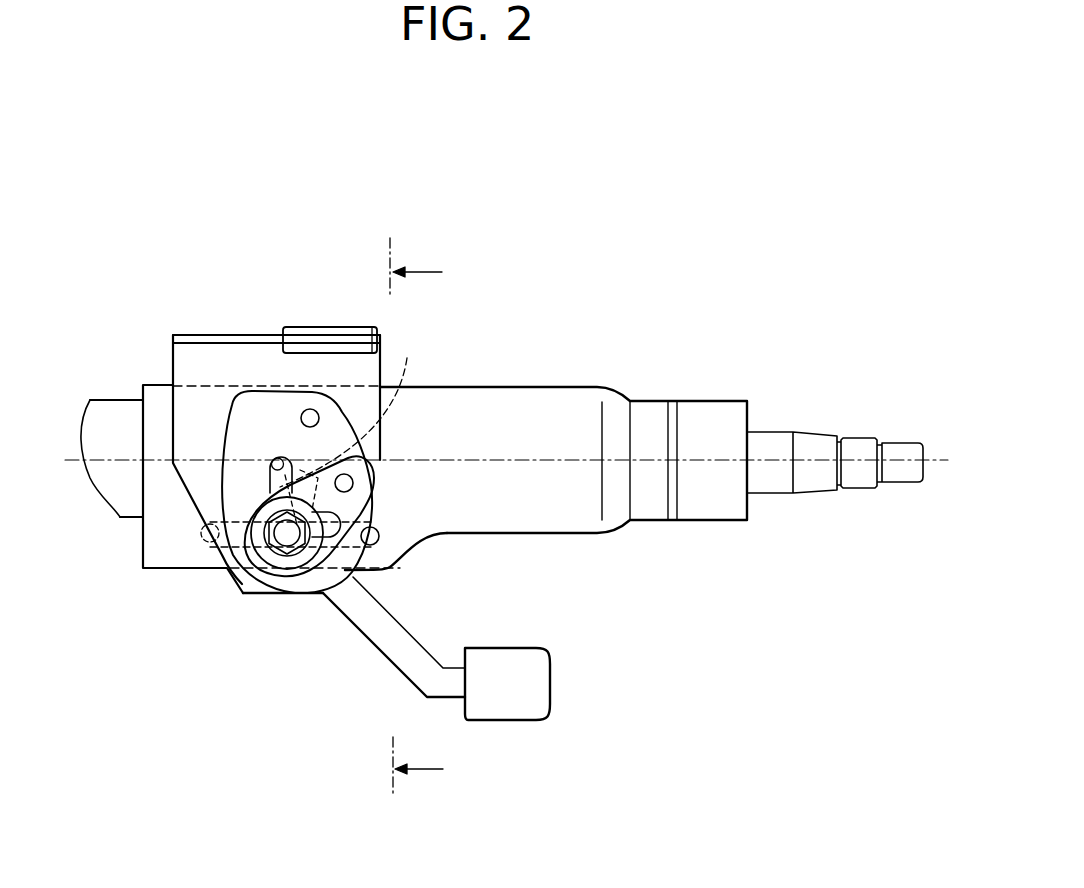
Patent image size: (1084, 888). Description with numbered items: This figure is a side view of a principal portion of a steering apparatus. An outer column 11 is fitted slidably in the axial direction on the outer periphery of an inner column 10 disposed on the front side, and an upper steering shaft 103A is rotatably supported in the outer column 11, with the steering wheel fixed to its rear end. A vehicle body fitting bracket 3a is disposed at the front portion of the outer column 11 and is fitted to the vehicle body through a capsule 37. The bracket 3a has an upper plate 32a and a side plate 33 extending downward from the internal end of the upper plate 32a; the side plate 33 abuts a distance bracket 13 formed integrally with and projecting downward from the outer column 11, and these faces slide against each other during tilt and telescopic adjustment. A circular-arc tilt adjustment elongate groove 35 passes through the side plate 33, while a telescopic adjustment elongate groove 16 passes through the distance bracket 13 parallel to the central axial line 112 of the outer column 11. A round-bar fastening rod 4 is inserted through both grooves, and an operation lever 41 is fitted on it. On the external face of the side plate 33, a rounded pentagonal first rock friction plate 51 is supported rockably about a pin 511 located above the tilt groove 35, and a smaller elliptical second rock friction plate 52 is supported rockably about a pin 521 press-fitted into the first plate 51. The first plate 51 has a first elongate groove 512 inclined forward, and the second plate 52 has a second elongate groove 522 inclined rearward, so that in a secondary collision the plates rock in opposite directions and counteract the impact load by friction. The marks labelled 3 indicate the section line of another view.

The inner column 10 is at (118, 500).
The outer column 11 is at (537, 523).
The central axial line 112 is at (524, 460).
The upper steering shaft 103A is at (902, 455).
The distance bracket 13 is at (183, 555).
The telescopic adjustment elongate groove 16 is at (213, 520).
The vehicle body fitting bracket 3a is at (285, 262).
The upper plate 32a is at (180, 332).
The side plate 33 is at (317, 587).
The tilt adjustment elongate groove 35 is at (355, 406).
The capsule 37 is at (338, 326).
The fastening rod 4 is at (263, 507).
The operation lever 41 is at (528, 710).
The first rock friction plate 51 is at (263, 407).
The pin 511 is at (309, 409).
The first elongate groove 512 is at (277, 458).
The second rock friction plate 52 is at (353, 507).
The pin 521 is at (353, 484).
The second elongate groove 522 is at (370, 548).
The section line III-III 3 is at (416, 522).